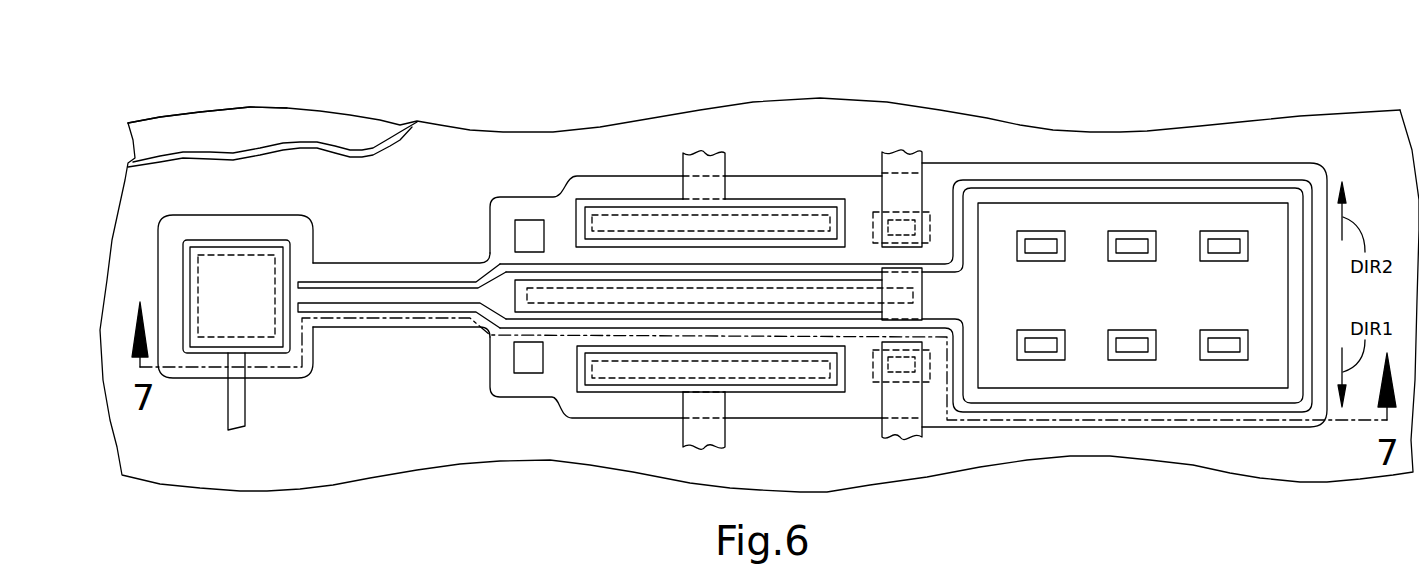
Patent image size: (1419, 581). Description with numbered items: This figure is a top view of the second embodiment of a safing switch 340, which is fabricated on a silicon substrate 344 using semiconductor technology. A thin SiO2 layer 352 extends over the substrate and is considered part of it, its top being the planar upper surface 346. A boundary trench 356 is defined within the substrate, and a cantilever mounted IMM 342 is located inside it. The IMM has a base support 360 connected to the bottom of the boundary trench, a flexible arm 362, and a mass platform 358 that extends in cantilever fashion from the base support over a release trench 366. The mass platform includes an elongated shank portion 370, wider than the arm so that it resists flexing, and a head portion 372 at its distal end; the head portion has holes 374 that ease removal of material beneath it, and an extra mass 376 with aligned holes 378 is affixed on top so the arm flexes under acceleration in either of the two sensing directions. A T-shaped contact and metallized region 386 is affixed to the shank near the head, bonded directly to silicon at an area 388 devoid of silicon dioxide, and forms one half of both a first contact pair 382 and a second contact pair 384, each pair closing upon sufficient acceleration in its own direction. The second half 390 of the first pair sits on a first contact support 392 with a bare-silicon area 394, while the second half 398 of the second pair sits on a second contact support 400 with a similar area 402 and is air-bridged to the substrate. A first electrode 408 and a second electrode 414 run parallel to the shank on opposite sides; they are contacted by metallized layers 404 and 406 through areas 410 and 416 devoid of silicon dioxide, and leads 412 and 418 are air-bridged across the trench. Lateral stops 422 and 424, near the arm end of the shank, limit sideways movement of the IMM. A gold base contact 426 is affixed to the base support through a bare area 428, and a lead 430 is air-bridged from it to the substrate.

The safing switch 340 is at (181, 73).
The IMM 342 is at (1190, 174).
The substrate 344 is at (289, 100).
The upper surface 346 is at (173, 120).
The SiO2 layer 352 is at (392, 140).
The boundary trench 356 is at (560, 218).
The mass platform 358 is at (979, 410).
The base support 360 is at (270, 242).
The flexible arm 362 is at (423, 297).
The release trench 366 is at (400, 282).
The shank portion 370 is at (482, 322).
The head portion 372 is at (1033, 198).
The holes 374 is at (1077, 301).
The extra mass 376 is at (1125, 212).
The holes 378 is at (1040, 337).
The first contact pair 382 is at (872, 248).
The second contact pair 384 is at (868, 350).
The contact and metallized region 386 is at (922, 280).
The area devoid of SiO2 388 is at (487, 268).
The second half of first contact pair 390 is at (887, 165).
The first contact support 392 is at (927, 222).
The area devoid of SiO2 394 is at (877, 210).
The second half of second contact pair 398 is at (887, 427).
The second contact support 400 is at (927, 368).
The area devoid of SiO2 402 is at (877, 362).
The metallized layer 404 is at (608, 208).
The metallized layer 406 is at (608, 385).
The first electrode 408 is at (577, 196).
The area devoid of SiO2 410 is at (640, 214).
The lead 412 is at (718, 170).
The second electrode 414 is at (577, 390).
The area devoid of SiO2 416 is at (643, 380).
The lead 418 is at (718, 427).
The first lateral stop 422 is at (522, 235).
The second lateral stop 424 is at (522, 360).
The base contact 426 is at (215, 250).
The area devoid of SiO2 428 is at (275, 263).
The lead 430 is at (243, 402).